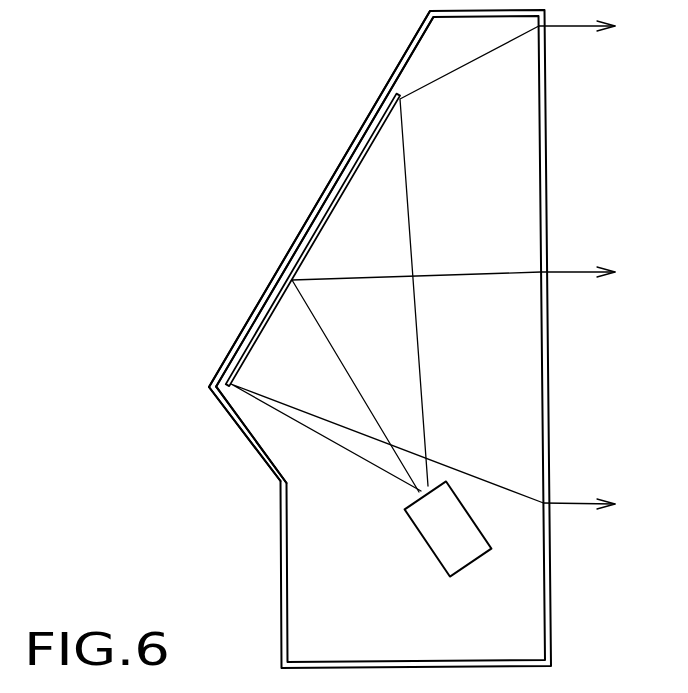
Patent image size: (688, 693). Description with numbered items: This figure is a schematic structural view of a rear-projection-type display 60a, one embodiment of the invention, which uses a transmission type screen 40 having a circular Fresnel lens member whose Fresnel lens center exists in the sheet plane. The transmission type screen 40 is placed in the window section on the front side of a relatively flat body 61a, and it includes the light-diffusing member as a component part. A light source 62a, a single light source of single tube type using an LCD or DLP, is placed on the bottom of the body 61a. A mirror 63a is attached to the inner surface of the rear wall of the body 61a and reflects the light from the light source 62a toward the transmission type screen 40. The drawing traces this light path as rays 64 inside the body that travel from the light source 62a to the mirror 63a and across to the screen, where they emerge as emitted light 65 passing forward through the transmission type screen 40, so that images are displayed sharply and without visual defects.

The transmission type screen 40 is at (545, 152).
The rear-projection-type display 60a is at (307, 183).
The body 61a is at (250, 448).
The light source 62a is at (425, 537).
The mirror 63a is at (260, 325).
The light ray inside housing 64 is at (477, 275).
The emitted light 65 is at (570, 275).